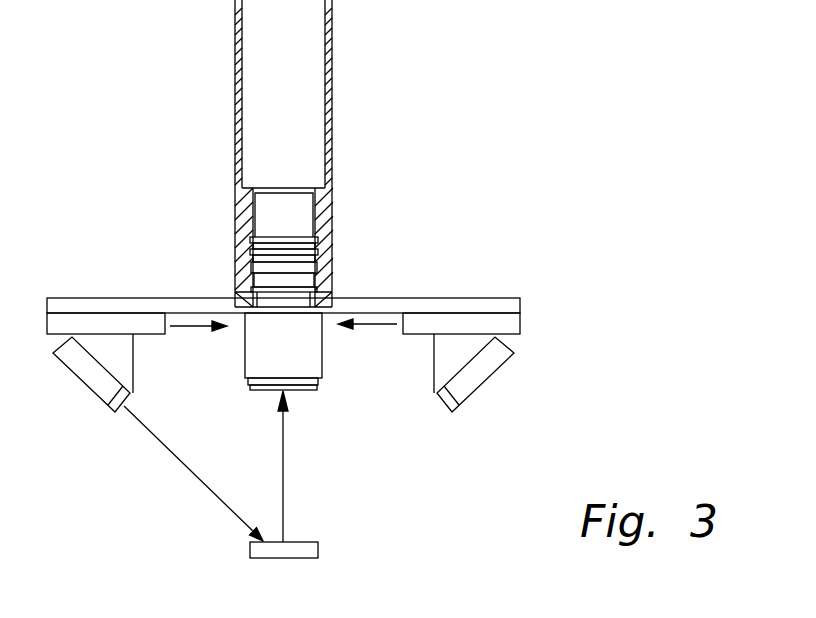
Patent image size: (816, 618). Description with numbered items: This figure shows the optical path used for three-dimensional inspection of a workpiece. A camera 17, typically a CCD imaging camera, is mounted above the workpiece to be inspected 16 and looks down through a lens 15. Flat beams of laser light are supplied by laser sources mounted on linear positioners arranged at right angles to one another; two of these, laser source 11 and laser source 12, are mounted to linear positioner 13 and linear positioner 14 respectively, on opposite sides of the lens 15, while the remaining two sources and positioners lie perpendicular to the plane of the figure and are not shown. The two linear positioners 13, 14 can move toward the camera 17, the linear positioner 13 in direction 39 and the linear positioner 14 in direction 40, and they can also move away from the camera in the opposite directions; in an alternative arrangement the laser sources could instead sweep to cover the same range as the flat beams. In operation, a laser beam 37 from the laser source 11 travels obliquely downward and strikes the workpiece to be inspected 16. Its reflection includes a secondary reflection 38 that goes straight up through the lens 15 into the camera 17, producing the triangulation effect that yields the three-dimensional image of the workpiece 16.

The laser source 11 is at (87, 388).
The laser source 12 is at (467, 400).
The linear positioner 13 is at (146, 310).
The linear positioner 14 is at (444, 316).
The lens 15 is at (325, 263).
The workpiece to be inspected 16 is at (298, 558).
The camera 17 is at (235, 62).
The laser beam 37 is at (197, 477).
The secondary reflection 38 is at (284, 471).
The direction 39 is at (196, 327).
The direction 40 is at (380, 325).